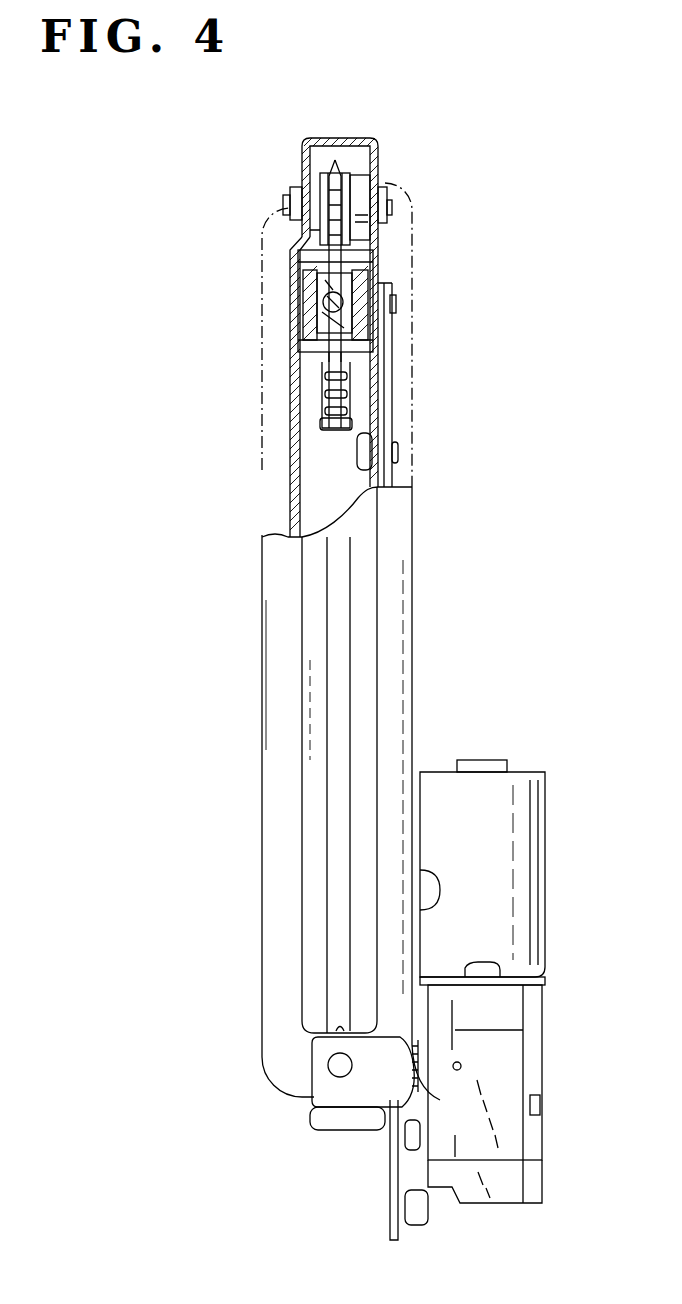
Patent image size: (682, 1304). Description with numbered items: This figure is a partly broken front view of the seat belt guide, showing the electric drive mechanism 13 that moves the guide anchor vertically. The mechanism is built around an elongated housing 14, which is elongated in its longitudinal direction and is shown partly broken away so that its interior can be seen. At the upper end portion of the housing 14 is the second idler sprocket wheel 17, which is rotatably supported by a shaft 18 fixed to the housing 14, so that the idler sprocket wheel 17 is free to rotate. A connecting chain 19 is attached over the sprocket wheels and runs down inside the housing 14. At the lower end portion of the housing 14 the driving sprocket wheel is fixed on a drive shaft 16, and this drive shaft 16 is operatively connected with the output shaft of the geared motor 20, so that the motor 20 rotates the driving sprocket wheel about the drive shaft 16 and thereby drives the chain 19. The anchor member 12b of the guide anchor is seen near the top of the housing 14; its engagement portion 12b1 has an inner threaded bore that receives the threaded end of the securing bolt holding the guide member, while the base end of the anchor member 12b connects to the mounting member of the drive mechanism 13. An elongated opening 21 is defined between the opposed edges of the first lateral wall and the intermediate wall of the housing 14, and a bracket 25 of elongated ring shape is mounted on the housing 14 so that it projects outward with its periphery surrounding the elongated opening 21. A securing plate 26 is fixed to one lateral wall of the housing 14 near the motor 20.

The anchor member 12b is at (399, 265).
The engagement portion 12b1 is at (348, 320).
The electric drive mechanism 13 is at (510, 907).
The elongated housing 14 is at (290, 467).
The drive shaft 16 is at (405, 1113).
The second idler sprocket wheel 17 is at (333, 162).
The shaft 18 is at (318, 193).
The connecting chain 19 is at (350, 396).
The geared motor 20 is at (535, 943).
The elongated opening 21 is at (325, 602).
The bracket 25 is at (270, 770).
The securing plate 26 is at (393, 1190).